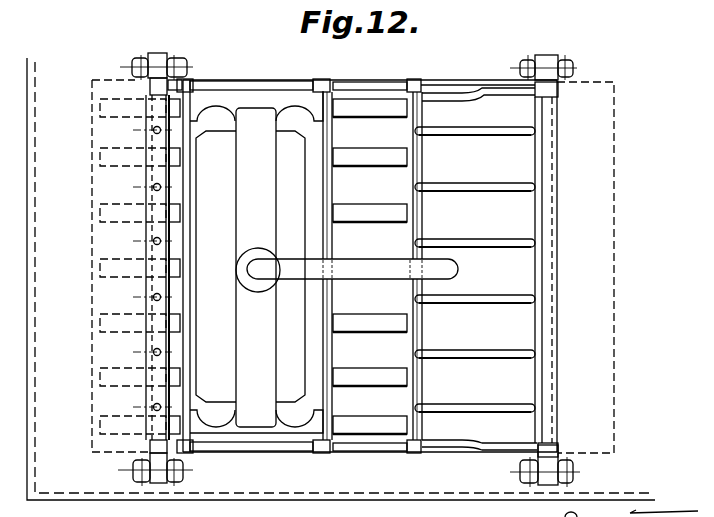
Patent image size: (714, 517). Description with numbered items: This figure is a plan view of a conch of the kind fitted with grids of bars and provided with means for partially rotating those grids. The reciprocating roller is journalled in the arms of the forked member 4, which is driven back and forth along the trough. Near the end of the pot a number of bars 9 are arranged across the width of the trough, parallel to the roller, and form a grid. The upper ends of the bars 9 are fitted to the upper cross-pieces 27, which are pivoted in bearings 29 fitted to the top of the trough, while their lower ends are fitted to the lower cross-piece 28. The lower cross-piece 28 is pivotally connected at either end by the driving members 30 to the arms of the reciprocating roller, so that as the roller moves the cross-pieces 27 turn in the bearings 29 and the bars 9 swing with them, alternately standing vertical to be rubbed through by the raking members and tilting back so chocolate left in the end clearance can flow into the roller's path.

The forked member 4 is at (324, 262).
The bars 9 is at (483, 297).
The upper cross-pieces 27 is at (557, 120).
The lower cross-piece 28 is at (418, 108).
The bearings 29 is at (170, 60).
The driving members 30 is at (375, 88).